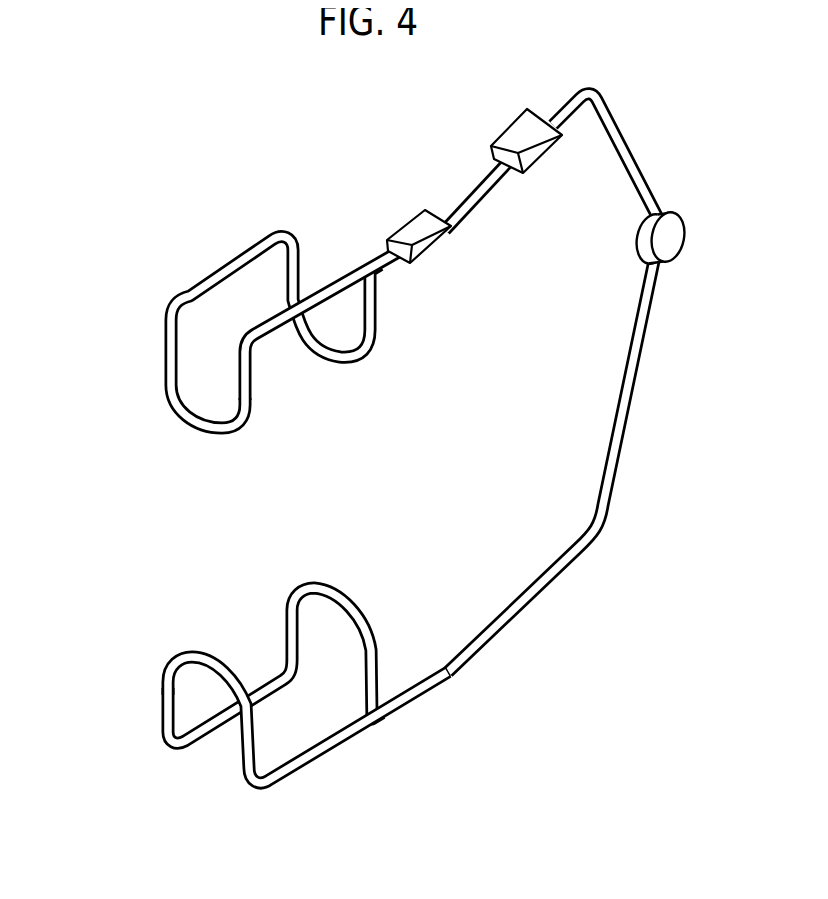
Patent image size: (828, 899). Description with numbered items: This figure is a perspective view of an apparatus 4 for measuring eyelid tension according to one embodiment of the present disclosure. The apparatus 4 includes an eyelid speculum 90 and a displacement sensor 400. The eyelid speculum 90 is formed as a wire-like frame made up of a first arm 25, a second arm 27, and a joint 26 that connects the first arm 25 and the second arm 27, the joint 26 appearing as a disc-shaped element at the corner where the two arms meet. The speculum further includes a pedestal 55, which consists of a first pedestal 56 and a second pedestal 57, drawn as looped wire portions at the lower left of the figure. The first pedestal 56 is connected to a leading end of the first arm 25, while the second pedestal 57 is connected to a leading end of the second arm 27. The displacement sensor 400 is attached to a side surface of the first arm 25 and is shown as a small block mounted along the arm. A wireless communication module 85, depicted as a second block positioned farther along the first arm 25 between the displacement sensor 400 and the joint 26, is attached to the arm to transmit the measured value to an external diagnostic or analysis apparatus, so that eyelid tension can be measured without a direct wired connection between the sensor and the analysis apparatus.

The apparatus for measuring eyelid tension 4 is at (573, 728).
The eyelid speculum 90 is at (371, 431).
The pedestal 55 is at (93, 437).
The first pedestal 56 is at (183, 409).
The second pedestal 57 is at (178, 654).
The first arm 25 is at (631, 146).
The joint 26 is at (645, 240).
The second arm 27 is at (629, 398).
The wireless communication module 85 is at (514, 131).
The displacement sensor 400 is at (411, 224).